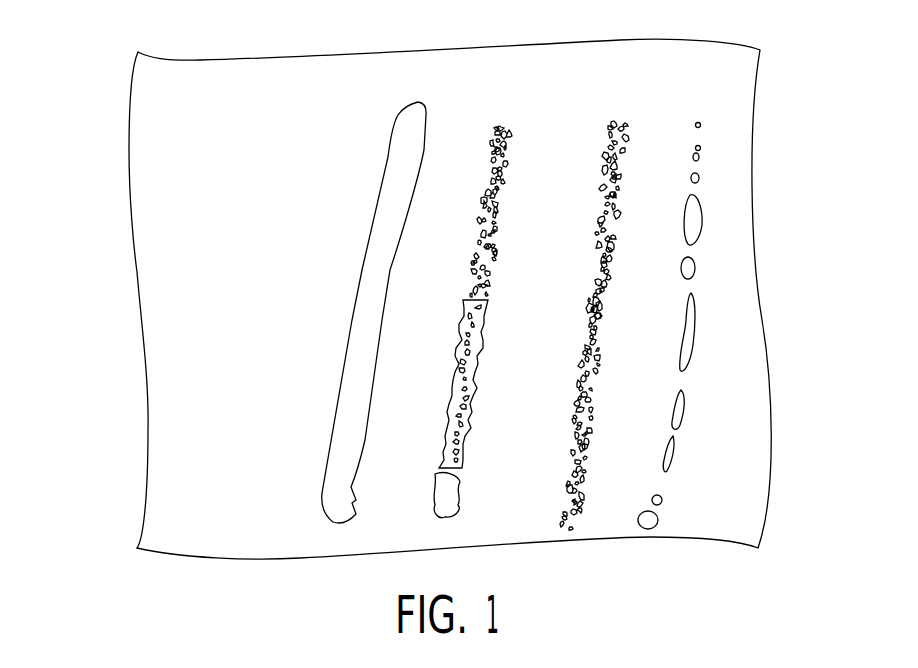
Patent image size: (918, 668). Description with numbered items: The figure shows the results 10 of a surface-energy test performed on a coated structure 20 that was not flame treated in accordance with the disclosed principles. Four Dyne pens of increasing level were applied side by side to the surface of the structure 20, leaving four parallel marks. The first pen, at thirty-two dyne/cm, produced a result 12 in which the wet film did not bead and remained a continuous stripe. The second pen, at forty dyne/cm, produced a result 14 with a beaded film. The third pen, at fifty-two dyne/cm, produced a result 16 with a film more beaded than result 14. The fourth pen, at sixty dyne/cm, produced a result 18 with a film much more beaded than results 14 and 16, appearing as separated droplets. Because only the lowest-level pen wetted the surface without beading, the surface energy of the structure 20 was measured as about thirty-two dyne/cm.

The results 10 is at (92, 89).
The result 12 is at (366, 143).
The result 14 is at (482, 126).
The result 16 is at (588, 145).
The result 18 is at (733, 222).
The coated structure 20 is at (158, 290).